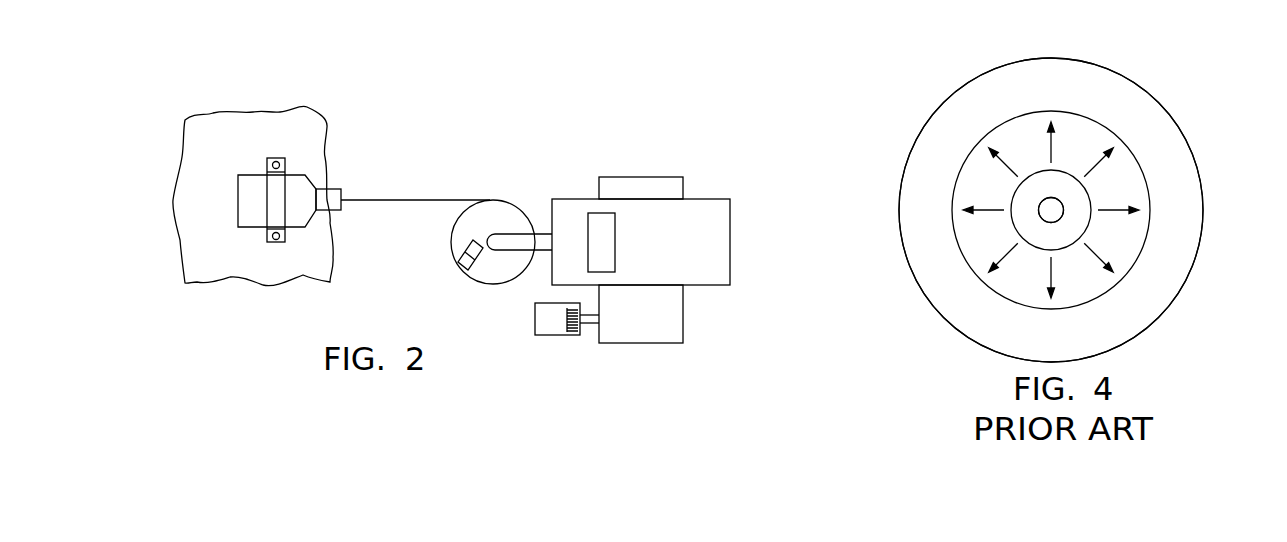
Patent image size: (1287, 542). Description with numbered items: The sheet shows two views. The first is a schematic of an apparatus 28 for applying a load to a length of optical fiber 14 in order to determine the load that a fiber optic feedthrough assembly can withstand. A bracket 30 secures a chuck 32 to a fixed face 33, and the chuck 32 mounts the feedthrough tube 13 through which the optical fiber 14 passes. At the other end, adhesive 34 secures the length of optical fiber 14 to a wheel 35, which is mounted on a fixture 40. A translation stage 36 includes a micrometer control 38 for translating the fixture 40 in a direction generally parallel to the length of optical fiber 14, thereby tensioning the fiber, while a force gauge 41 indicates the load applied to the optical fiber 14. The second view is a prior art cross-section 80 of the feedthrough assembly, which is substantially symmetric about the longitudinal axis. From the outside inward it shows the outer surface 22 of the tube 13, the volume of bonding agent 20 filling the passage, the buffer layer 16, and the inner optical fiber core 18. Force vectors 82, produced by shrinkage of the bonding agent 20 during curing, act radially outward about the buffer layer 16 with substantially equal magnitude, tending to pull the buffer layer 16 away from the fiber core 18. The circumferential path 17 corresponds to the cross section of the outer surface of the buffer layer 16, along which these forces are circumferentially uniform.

In FIG. 2, the feedthrough tube 13 is at (330, 197).
In FIG. 4, the feedthrough tube 13 is at (1090, 90).
In FIG. 2, the length of optical fiber 14 is at (402, 200).
In FIG. 4, the buffer layer 16 is at (1037, 235).
In FIG. 4, the circumferential path 17 is at (1090, 200).
In FIG. 4, the optical fiber core 18 is at (1035, 207).
In FIG. 4, the bonding agent 20 is at (1120, 175).
In FIG. 4, the outer surface 22 is at (960, 88).
In FIG. 2, the apparatus 28 is at (587, 229).
In FIG. 2, the bracket 30 is at (286, 213).
In FIG. 2, the chuck 32 is at (297, 213).
In FIG. 2, the fixed face 33 is at (207, 178).
In FIG. 2, the adhesive 34 is at (452, 279).
In FIG. 2, the wheel 35 is at (510, 218).
In FIG. 2, the translation stage 36 is at (663, 315).
In FIG. 2, the micrometer control 38 is at (550, 323).
In FIG. 2, the fixture 40 is at (717, 257).
In FIG. 2, the force gauge 41 is at (592, 223).
In FIG. 4, the cross-section 80 is at (1082, 192).
In FIG. 4, the force vectors 82 is at (1108, 213).